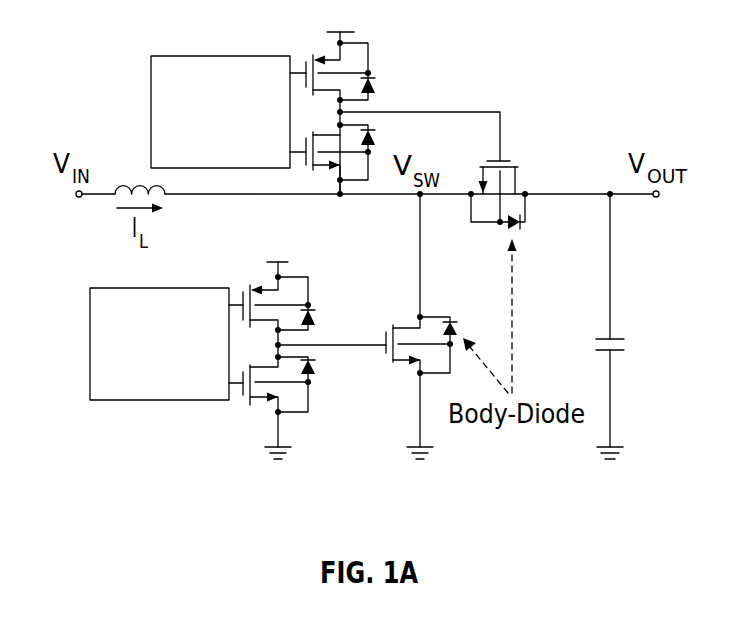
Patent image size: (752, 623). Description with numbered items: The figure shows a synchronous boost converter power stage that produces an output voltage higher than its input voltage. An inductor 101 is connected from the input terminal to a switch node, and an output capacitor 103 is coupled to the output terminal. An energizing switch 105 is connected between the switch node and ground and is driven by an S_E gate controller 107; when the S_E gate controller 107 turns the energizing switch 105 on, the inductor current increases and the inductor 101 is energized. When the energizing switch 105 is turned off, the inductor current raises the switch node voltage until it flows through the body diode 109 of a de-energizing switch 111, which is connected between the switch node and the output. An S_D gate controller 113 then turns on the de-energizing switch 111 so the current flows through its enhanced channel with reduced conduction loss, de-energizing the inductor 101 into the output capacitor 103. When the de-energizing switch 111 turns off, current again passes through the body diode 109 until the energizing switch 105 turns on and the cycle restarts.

The inductor 101 is at (140, 183).
The output capacitor 103 is at (607, 336).
The energizing switch 105 is at (407, 326).
The S_E gate controller 107 is at (113, 288).
The body diode 109 is at (508, 232).
The de-energizing switch 111 is at (497, 160).
The S_D gate controller 113 is at (185, 56).